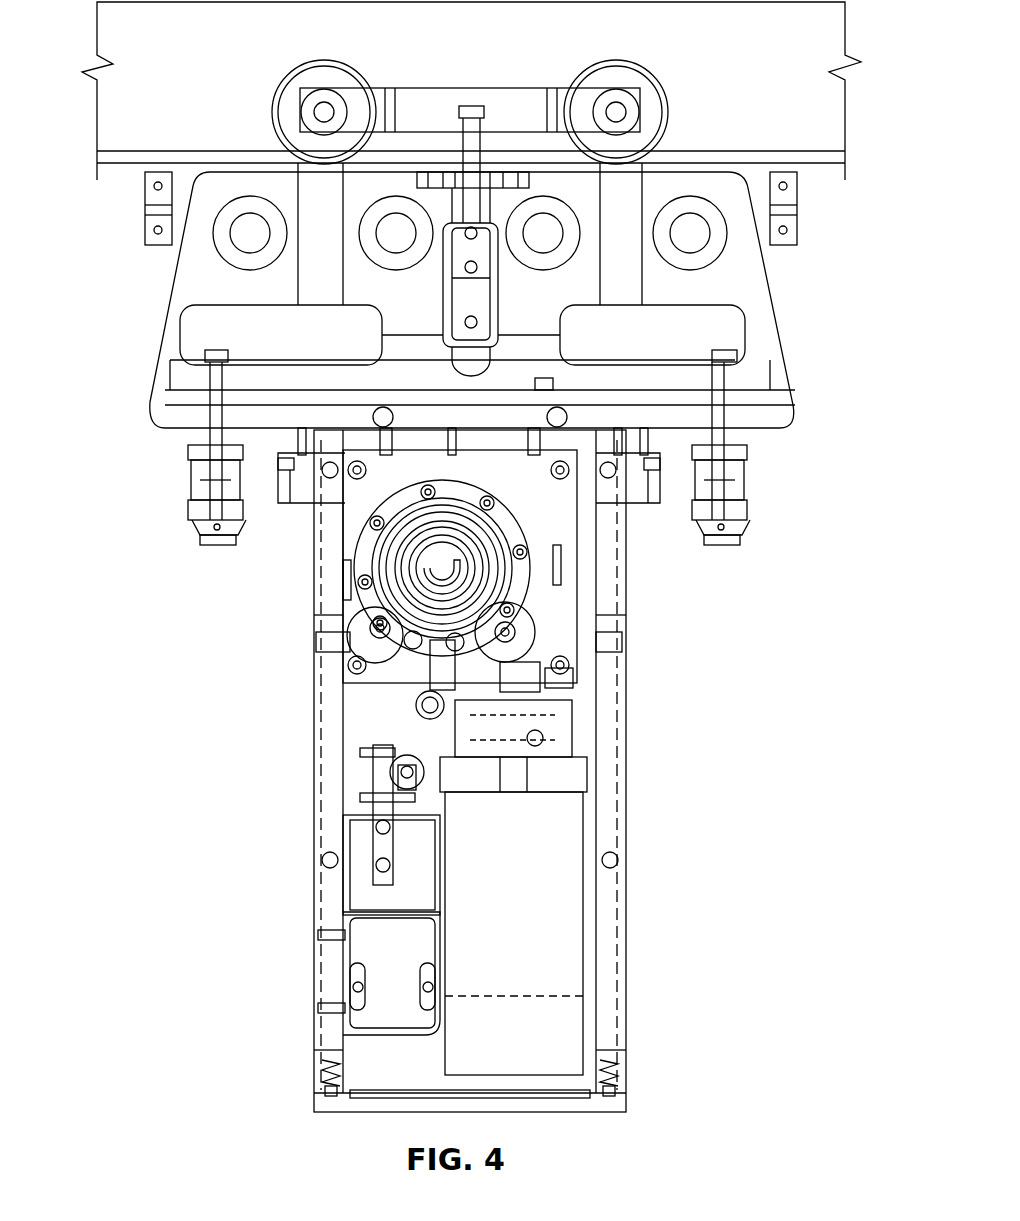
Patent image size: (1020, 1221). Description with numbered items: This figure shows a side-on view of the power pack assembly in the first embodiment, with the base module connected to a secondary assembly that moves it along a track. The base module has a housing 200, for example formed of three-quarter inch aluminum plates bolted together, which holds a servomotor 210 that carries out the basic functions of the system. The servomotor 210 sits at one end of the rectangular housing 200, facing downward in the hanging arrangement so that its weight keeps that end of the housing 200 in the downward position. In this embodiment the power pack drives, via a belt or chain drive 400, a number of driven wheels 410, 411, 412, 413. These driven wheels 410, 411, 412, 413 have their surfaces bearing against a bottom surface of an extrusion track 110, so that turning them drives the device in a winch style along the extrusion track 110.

The extrusion track 110 is at (148, 78).
The belt or chain drive 400 is at (218, 278).
The driven wheel 410 is at (250, 196).
The driven wheel 411 is at (397, 198).
The driven wheel 412 is at (540, 198).
The driven wheel 413 is at (689, 198).
The housing 200 is at (316, 1052).
The servomotor 210 is at (537, 897).